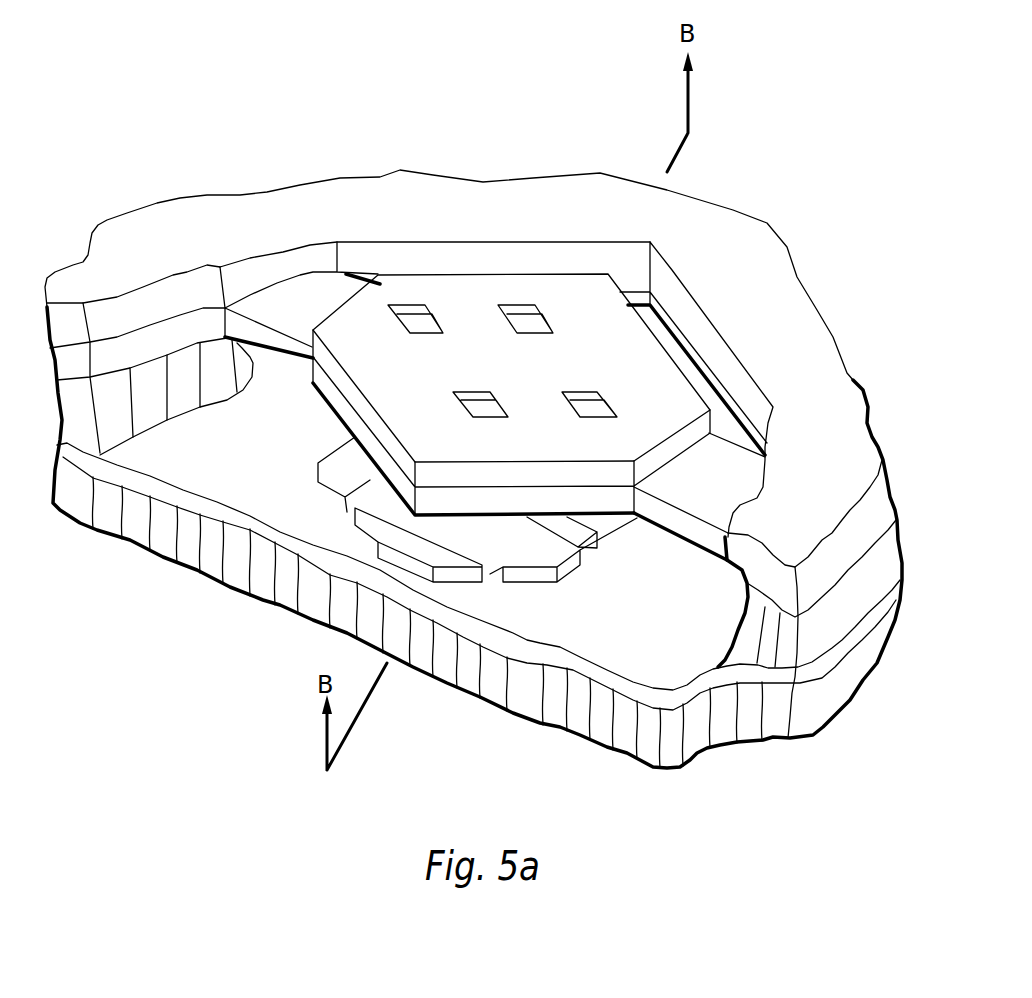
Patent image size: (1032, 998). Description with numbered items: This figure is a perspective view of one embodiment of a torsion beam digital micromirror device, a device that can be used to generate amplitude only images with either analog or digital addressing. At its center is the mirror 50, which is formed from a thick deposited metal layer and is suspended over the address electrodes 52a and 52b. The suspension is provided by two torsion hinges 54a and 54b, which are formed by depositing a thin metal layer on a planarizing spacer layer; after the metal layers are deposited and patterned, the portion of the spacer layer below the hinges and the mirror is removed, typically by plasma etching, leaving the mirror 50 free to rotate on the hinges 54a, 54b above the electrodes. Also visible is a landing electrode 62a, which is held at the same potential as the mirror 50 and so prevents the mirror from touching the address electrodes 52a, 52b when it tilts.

The mirror 50 is at (510, 290).
The torsion hinge 54a is at (288, 288).
The torsion hinge 54b is at (748, 480).
The address electrode 52a is at (513, 575).
The address electrode 52b is at (613, 533).
The landing electrode 62a is at (370, 537).